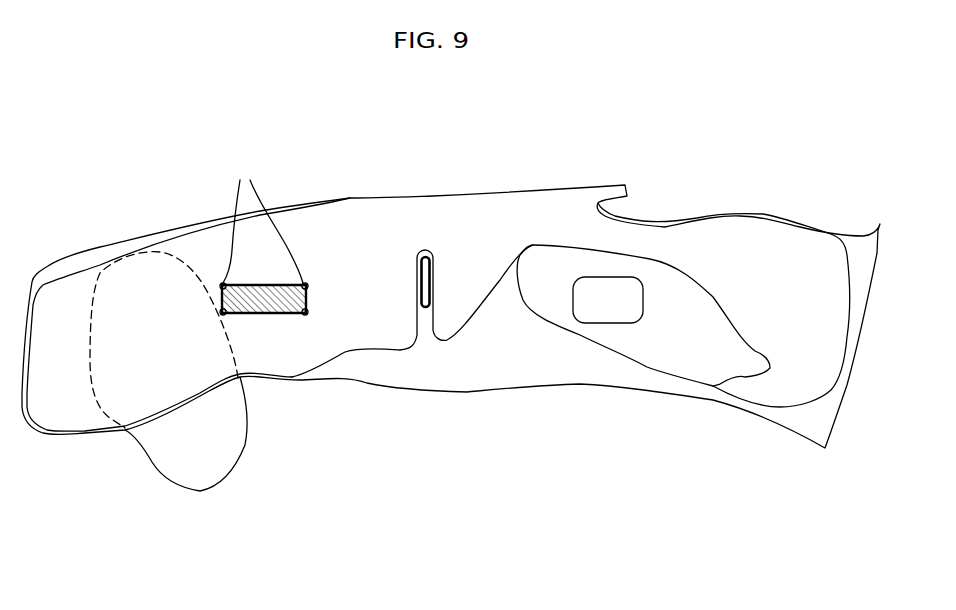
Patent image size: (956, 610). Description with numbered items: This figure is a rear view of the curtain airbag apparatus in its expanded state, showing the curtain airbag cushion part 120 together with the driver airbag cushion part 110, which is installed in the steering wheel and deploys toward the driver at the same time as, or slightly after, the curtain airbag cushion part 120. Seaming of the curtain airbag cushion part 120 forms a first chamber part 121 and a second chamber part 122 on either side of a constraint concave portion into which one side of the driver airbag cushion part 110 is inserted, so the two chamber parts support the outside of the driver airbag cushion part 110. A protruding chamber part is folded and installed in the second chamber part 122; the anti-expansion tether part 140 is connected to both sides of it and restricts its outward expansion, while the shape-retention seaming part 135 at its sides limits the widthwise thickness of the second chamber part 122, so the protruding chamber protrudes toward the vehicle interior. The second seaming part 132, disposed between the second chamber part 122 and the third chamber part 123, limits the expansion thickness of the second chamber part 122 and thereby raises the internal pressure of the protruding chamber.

The driver airbag cushion part 110 is at (192, 442).
The curtain airbag cushion part 120 is at (689, 132).
The first chamber part 121 is at (60, 407).
The second chamber part 122 is at (360, 247).
The third chamber part 123 is at (472, 247).
The second seaming part 132 is at (425, 308).
The shape-retention seaming part 135 is at (263, 214).
The anti-expansion tether part 140 is at (278, 312).